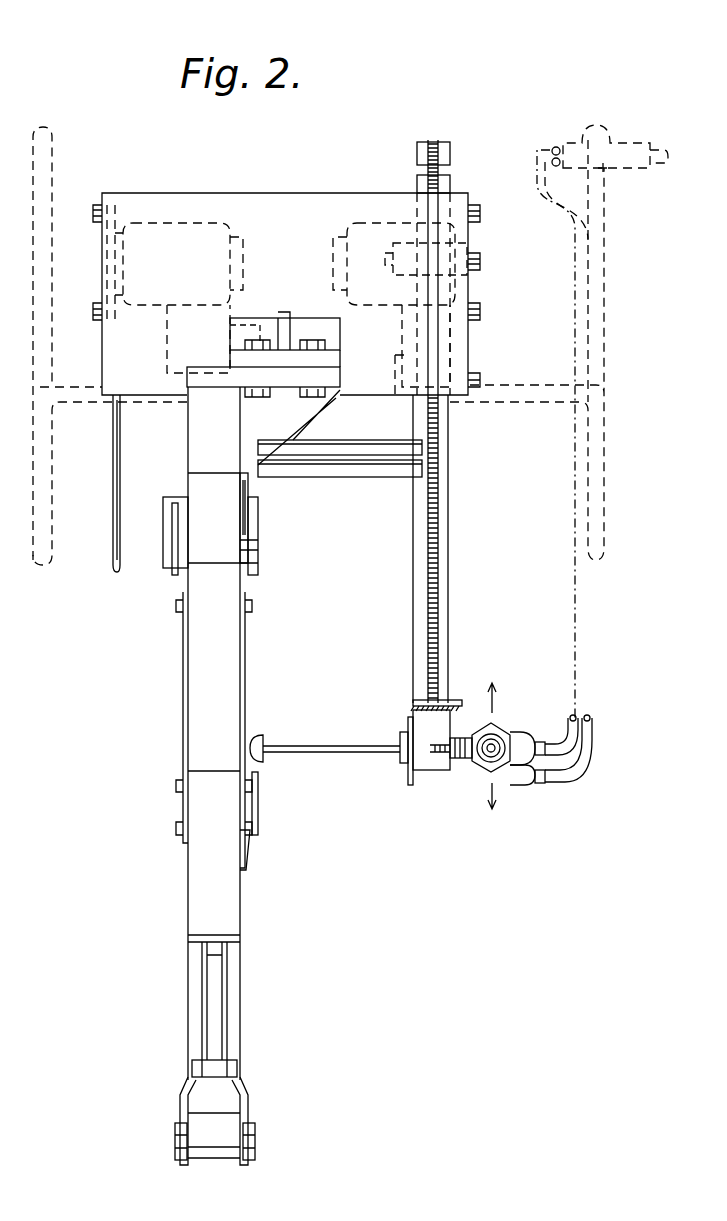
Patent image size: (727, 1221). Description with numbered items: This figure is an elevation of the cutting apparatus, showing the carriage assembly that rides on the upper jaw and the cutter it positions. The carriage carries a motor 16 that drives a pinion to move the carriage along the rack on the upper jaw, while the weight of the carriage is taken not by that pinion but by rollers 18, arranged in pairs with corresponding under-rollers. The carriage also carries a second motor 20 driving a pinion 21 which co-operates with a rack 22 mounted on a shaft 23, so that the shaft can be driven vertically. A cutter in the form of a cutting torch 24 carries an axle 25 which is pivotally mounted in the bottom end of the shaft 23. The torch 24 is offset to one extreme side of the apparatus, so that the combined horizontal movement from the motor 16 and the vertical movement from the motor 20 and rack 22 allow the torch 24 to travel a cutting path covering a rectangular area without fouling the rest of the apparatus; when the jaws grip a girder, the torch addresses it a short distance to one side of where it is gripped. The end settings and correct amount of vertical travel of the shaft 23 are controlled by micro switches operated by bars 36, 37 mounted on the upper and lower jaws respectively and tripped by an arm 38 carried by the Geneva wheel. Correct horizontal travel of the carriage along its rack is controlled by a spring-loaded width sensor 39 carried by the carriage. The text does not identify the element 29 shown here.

The motor 16 is at (177, 232).
The rollers 18 is at (264, 327).
The second motor 20 is at (372, 230).
The pinion 21 is at (457, 340).
The rack 22 is at (433, 532).
The shaft 23 is at (448, 593).
The cutting torch 24 is at (507, 732).
The axle 25 is at (462, 771).
The support bars 29 is at (333, 448).
The bar 36 is at (260, 537).
The bar 37 is at (257, 815).
The arm 38 is at (335, 747).
The spring-loaded width sensor 39 is at (120, 450).